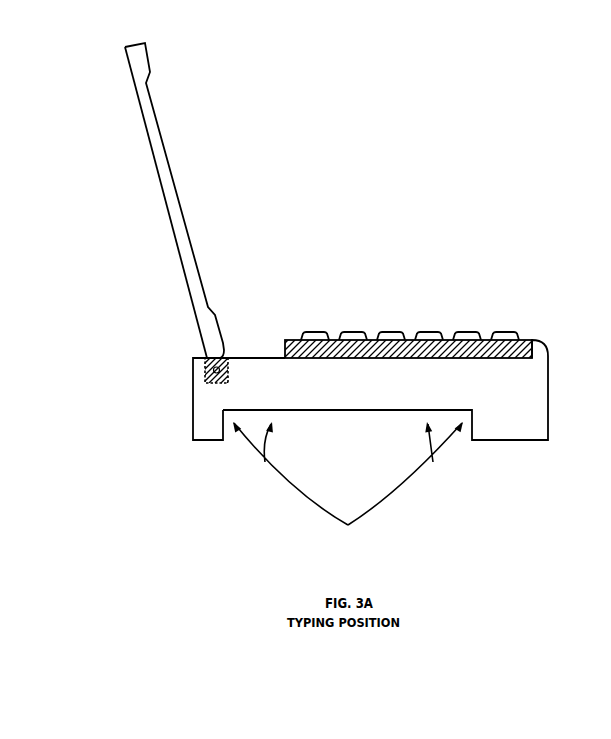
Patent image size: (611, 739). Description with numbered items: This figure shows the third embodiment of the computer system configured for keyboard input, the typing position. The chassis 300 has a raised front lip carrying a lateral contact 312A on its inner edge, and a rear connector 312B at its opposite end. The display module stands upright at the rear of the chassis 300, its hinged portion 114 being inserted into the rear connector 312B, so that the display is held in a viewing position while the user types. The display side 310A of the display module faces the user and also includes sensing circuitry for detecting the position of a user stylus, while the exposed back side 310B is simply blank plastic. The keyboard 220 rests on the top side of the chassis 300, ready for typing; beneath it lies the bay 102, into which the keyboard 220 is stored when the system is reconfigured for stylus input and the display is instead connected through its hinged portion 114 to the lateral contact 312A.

The chassis 300 is at (529, 429).
The lateral contact 312A is at (534, 332).
The rear connector 312B is at (215, 387).
The display side 310A is at (190, 220).
The back side 310B is at (167, 232).
The hinged portion 114 is at (232, 353).
The keyboard 220 is at (391, 320).
The bay 102 is at (348, 487).